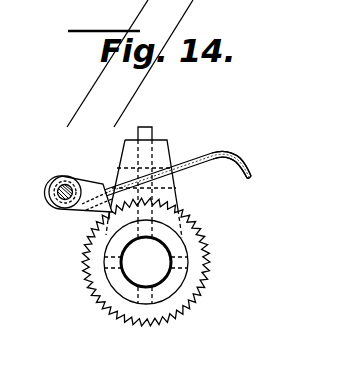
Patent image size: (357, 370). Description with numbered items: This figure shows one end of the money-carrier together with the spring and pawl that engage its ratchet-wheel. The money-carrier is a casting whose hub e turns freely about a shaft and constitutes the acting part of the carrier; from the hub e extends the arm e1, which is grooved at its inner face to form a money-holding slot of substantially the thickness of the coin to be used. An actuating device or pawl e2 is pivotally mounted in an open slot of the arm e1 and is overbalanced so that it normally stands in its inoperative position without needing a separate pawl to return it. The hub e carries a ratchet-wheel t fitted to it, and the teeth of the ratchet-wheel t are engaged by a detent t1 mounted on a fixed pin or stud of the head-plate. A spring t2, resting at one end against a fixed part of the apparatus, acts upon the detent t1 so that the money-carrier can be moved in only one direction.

The hub e is at (120, 283).
The arm e1 is at (130, 153).
The actuating device or pawl e2 is at (148, 127).
The ratchet-wheel t is at (193, 247).
The detent t1 is at (83, 208).
The spring t2 is at (214, 157).